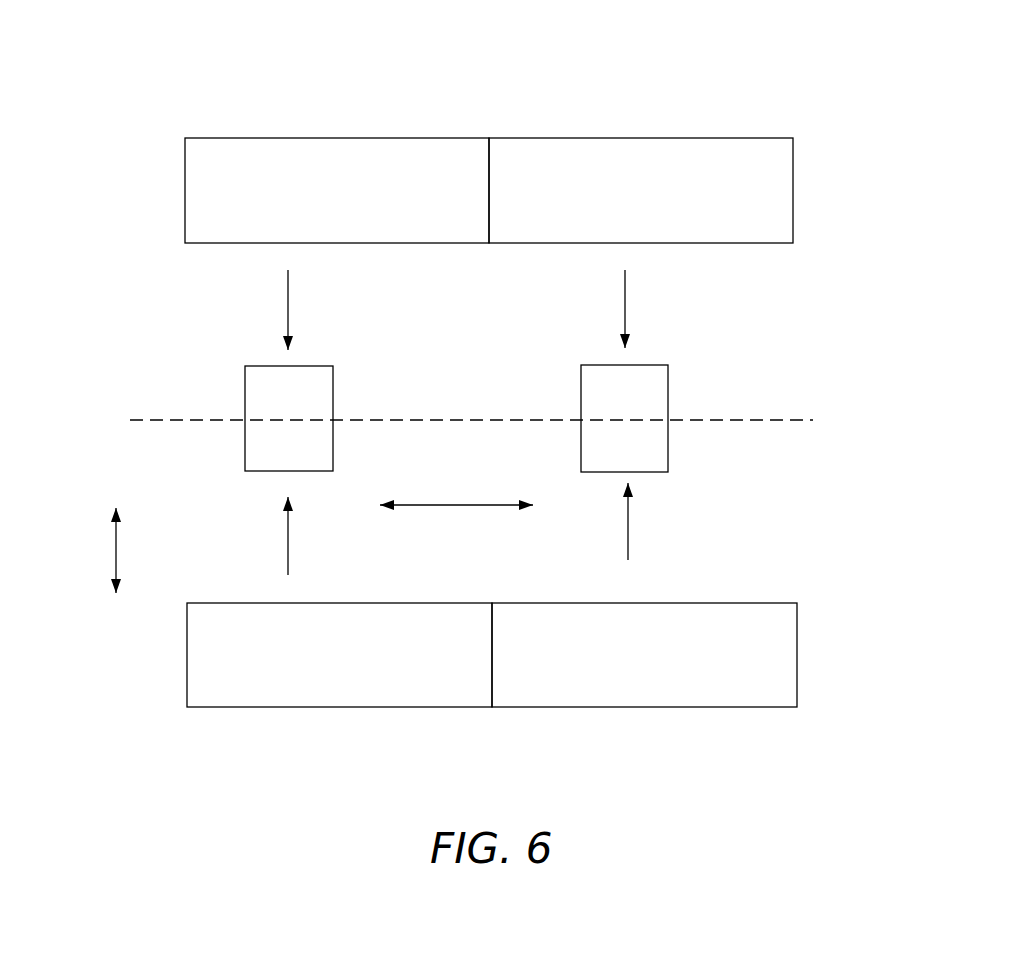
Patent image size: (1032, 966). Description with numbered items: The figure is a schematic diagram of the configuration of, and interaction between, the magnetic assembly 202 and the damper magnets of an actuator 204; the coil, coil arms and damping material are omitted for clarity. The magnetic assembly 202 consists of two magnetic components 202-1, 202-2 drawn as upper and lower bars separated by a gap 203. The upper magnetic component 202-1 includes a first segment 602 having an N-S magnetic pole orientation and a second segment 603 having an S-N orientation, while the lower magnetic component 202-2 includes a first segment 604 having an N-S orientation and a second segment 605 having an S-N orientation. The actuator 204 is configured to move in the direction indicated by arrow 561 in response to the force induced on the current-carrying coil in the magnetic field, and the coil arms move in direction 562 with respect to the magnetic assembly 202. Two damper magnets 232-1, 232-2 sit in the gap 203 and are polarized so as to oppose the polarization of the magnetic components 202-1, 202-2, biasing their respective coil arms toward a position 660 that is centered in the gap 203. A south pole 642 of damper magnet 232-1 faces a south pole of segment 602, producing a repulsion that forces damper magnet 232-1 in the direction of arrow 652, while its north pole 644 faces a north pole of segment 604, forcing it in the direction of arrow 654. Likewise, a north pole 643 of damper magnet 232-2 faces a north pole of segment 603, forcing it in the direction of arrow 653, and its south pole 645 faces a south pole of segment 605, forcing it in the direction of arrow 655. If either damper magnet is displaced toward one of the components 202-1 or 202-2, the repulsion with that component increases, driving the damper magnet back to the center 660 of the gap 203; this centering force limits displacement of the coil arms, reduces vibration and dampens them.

The magnetic assembly 202 is at (265, 93).
The magnetic component 202-1 is at (814, 199).
The magnetic component 202-2 is at (816, 653).
The gap 203 is at (74, 357).
The actuator 204 is at (190, 352).
The damper magnet 232-1 is at (333, 393).
The damper magnet 232-2 is at (581, 380).
The arrow 561 is at (442, 505).
The direction 562 is at (116, 556).
The first segment 602 is at (360, 200).
The second segment 603 is at (664, 200).
The first segment 604 is at (360, 665).
The second segment 605 is at (664, 665).
The south pole 642 is at (314, 366).
The north pole 643 is at (651, 365).
The north pole 644 is at (305, 471).
The south pole 645 is at (650, 472).
The arrow 652 is at (288, 310).
The arrow 653 is at (625, 310).
The arrow 654 is at (288, 556).
The arrow 655 is at (628, 540).
The center 660 is at (724, 420).